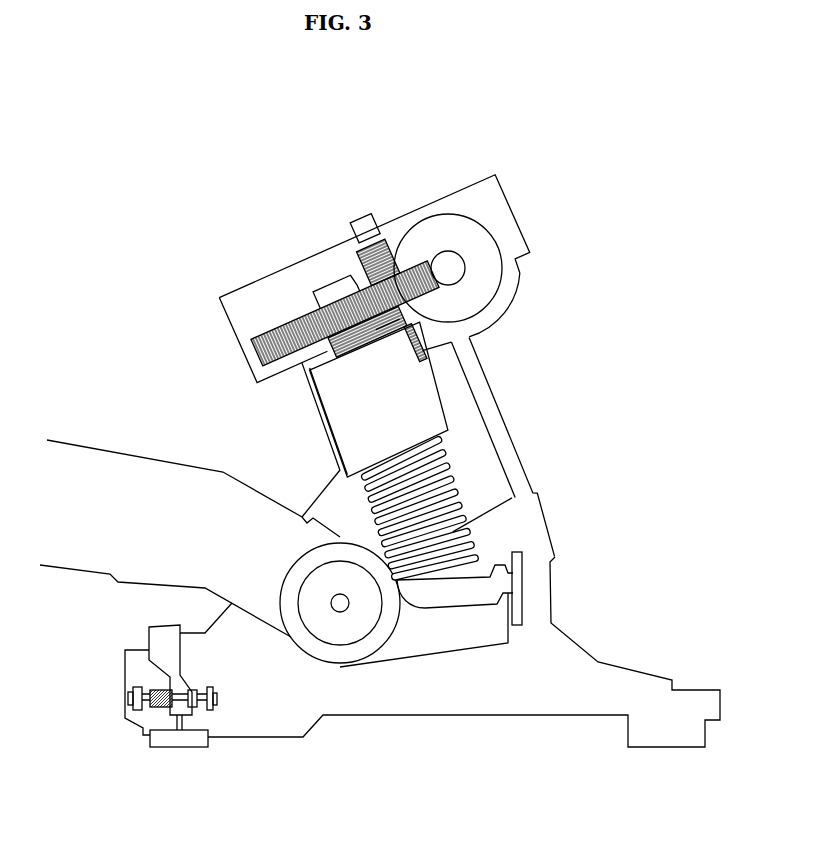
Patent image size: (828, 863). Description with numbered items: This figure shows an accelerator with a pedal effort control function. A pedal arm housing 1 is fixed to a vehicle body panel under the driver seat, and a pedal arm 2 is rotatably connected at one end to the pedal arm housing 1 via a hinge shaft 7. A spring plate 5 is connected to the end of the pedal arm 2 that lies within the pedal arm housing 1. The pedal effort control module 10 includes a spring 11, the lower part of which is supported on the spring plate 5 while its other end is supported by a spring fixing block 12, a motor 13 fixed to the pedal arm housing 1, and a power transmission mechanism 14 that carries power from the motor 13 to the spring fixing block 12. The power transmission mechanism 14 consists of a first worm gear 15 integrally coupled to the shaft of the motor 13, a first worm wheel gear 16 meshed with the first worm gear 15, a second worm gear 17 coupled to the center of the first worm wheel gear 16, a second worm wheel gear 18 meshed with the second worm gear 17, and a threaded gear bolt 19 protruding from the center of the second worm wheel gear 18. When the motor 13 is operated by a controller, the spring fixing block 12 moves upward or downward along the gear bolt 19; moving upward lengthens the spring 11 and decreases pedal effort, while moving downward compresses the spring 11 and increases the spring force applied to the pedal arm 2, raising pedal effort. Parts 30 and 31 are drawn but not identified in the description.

The pedal arm housing 1 is at (551, 586).
The pedal arm 2 is at (98, 468).
The spring plate 5 is at (455, 590).
The hinge shaft 7 is at (348, 636).
The pedal effort control module 10 is at (252, 333).
The spring 11 is at (458, 503).
The spring fixing block 12 is at (412, 400).
The motor 13 is at (480, 447).
The power transmission mechanism 14 is at (494, 232).
The first worm gear 15 is at (358, 226).
The first worm wheel gear 16 is at (440, 228).
The second worm gear 17 is at (452, 272).
The second worm wheel gear 18 is at (288, 336).
The gear bolt 19 is at (325, 297).
The bolt 30 is at (183, 710).
The lever 31 is at (160, 638).